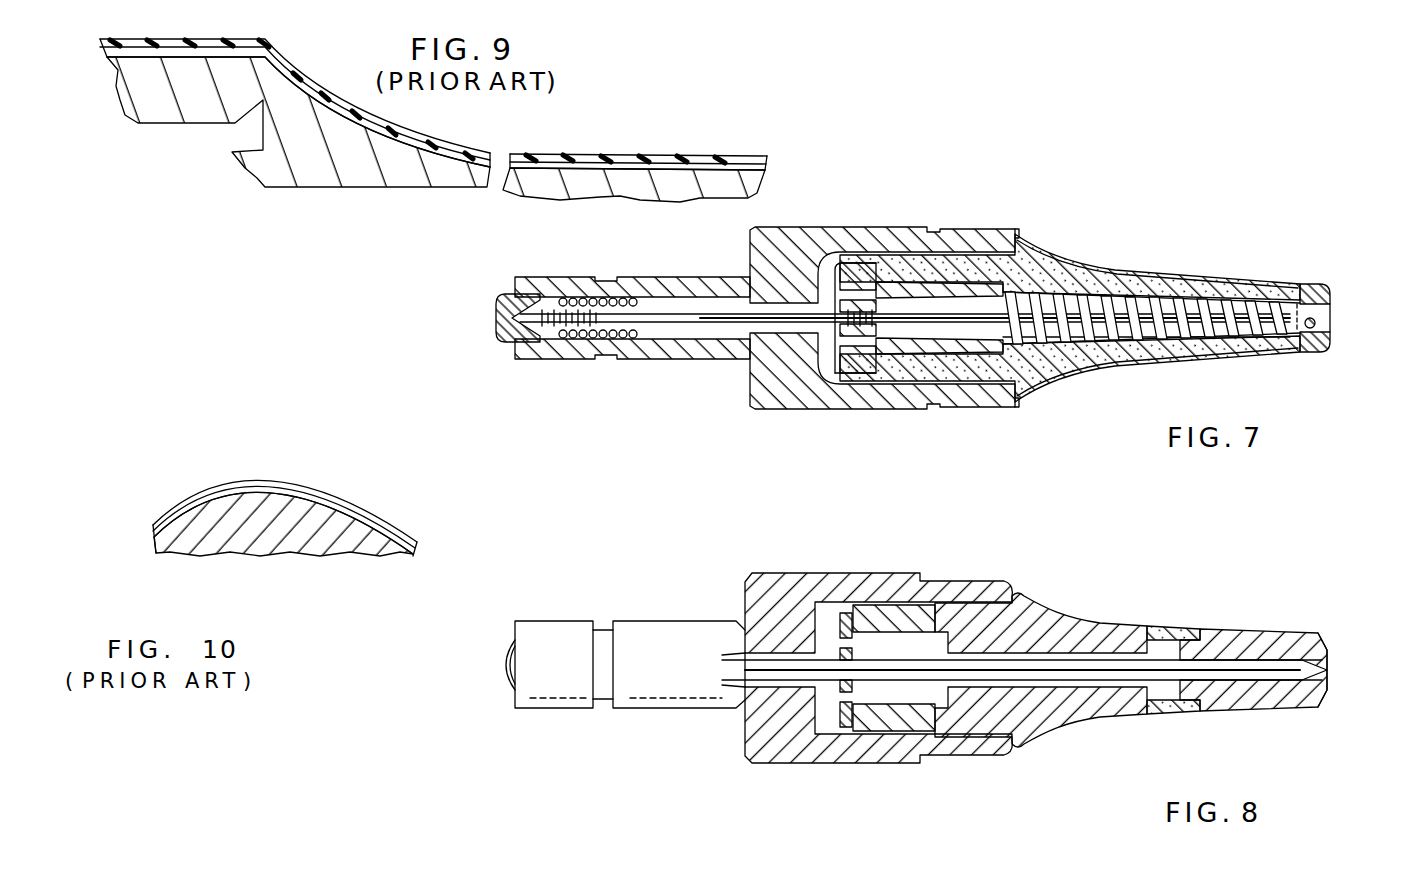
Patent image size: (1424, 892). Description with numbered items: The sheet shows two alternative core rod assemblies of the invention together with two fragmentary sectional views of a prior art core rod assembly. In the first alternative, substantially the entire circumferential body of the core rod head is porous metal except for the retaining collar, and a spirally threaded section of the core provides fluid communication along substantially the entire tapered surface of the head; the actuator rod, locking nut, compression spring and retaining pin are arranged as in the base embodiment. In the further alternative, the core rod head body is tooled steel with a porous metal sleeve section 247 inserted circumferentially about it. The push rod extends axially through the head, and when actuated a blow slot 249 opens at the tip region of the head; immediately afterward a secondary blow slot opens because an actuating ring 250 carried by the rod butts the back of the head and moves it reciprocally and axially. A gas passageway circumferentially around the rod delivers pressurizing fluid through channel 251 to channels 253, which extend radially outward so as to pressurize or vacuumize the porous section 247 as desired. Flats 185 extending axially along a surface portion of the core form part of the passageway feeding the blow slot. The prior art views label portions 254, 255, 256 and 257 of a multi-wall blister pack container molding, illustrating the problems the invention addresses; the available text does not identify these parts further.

In FIG. 8, the flats 185 is at (917, 602).
In FIG. 8, the porous metal sleeve section 247 is at (1198, 626).
In FIG. 8, the blow slot 249 is at (1320, 634).
In FIG. 8, the actuating ring 250 is at (846, 728).
In FIG. 8, the channel 251 is at (1077, 681).
In FIG. 8, the channels 253 is at (1178, 714).
In FIG. 9, the coating layer 254 is at (670, 162).
In FIG. 10, the coating layer 254 is at (405, 538).
In FIG. 9, the substrate 255 is at (508, 180).
In FIG. 10, the substrate 255 is at (290, 545).
In FIG. 9, the outer layer 256 is at (638, 154).
In FIG. 10, the coating layer 257 is at (280, 480).